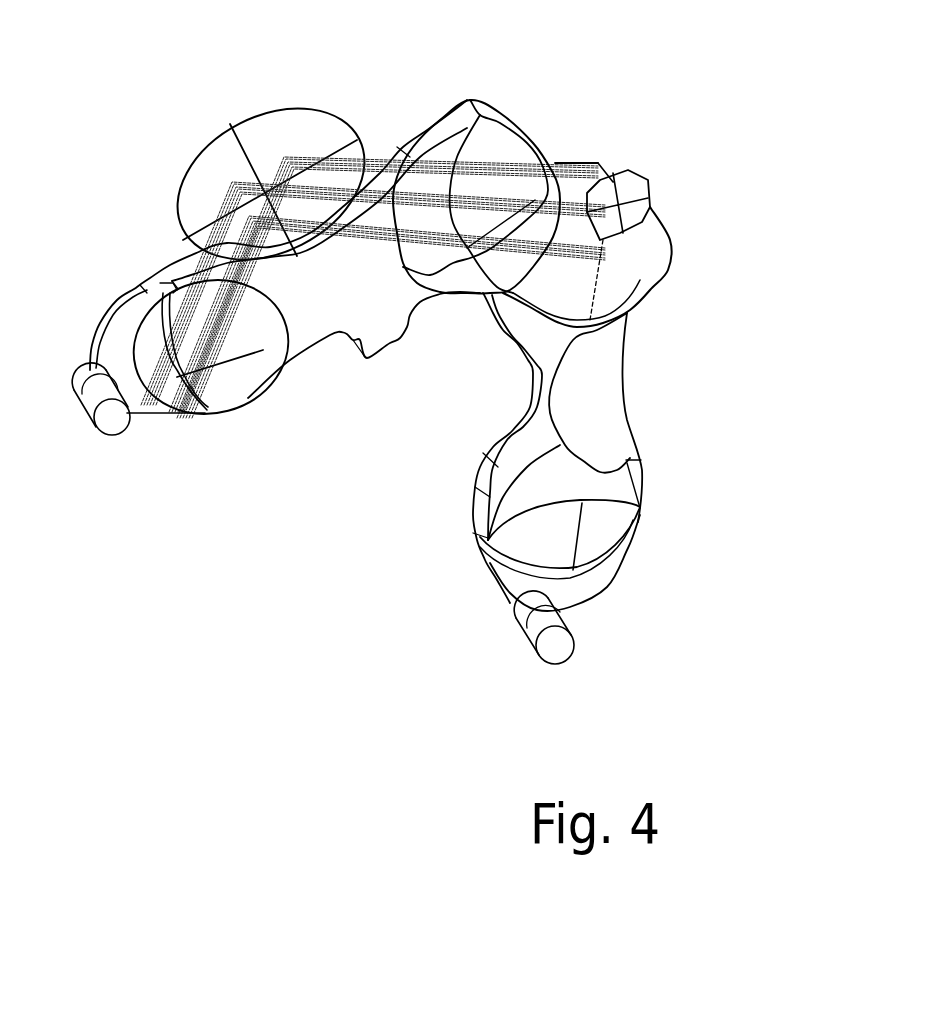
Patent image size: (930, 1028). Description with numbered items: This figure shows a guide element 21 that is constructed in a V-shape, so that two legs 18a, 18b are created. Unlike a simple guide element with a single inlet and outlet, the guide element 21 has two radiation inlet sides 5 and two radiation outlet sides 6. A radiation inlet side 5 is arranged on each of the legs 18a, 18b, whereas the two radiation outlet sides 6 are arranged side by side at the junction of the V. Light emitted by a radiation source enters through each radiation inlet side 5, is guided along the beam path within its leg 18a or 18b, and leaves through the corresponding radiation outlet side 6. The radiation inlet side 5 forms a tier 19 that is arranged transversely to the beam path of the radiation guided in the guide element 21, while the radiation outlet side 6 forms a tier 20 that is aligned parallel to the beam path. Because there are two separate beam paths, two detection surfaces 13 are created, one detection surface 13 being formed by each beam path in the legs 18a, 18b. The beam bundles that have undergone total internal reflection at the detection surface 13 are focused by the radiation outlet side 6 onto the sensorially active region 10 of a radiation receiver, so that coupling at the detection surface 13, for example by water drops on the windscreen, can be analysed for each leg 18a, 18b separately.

The radiation inlet side 5 is at (147, 323).
The radiation outlet side 6 is at (517, 133).
The sensorially active region 10 is at (641, 183).
The detection surface 13 is at (289, 124).
The leg 18a is at (322, 330).
The leg 18b is at (617, 424).
The tier 19 is at (171, 283).
The tier 20 is at (558, 158).
The guide element 21 is at (652, 378).